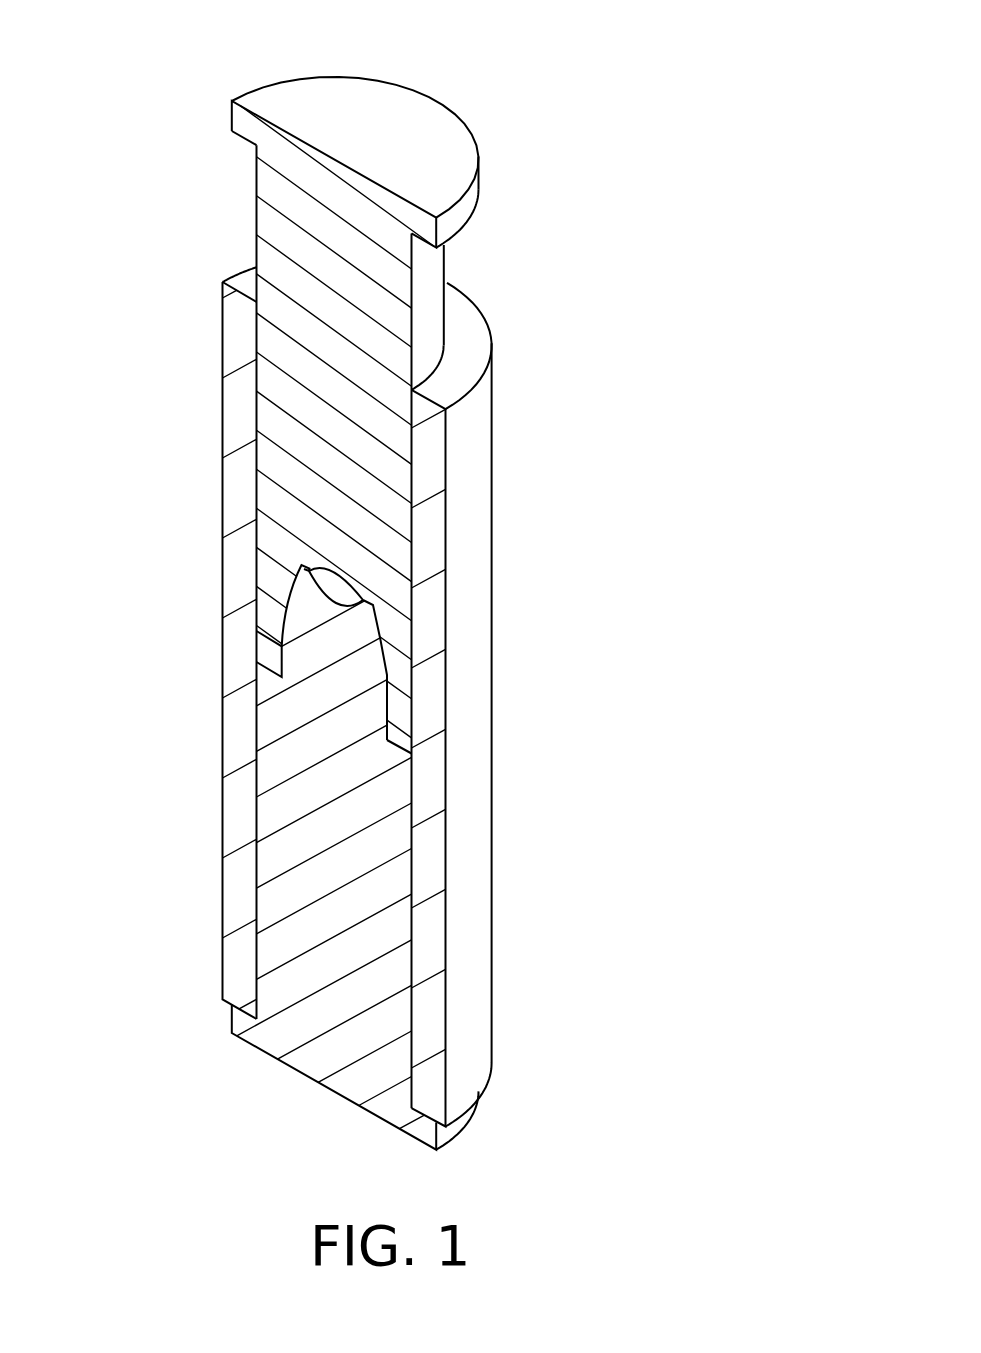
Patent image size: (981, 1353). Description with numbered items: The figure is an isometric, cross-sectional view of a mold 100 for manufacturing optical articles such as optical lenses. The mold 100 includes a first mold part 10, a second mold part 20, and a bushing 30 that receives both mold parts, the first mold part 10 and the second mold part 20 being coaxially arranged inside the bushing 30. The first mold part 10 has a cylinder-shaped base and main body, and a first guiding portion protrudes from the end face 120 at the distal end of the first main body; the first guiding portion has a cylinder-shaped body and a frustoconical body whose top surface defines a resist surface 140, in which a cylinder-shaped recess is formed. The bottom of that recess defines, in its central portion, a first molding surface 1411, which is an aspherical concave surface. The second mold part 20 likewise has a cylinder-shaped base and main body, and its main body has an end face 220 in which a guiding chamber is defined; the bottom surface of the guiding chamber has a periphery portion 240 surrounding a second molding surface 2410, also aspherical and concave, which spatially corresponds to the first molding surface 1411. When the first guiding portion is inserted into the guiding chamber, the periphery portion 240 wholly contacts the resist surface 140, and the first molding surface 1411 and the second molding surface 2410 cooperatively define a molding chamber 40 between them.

The mold 100 is at (465, 80).
The second mold part 20 is at (287, 203).
The first mold part 10 is at (360, 945).
The bushing 30 is at (432, 860).
The molding chamber 40 is at (319, 593).
The resist surface 140 is at (295, 570).
The first molding surface 1411 is at (335, 616).
The second molding surface 2410 is at (331, 556).
The periphery portion 240 is at (366, 598).
The end face 120 is at (263, 674).
The end face 220 is at (401, 741).